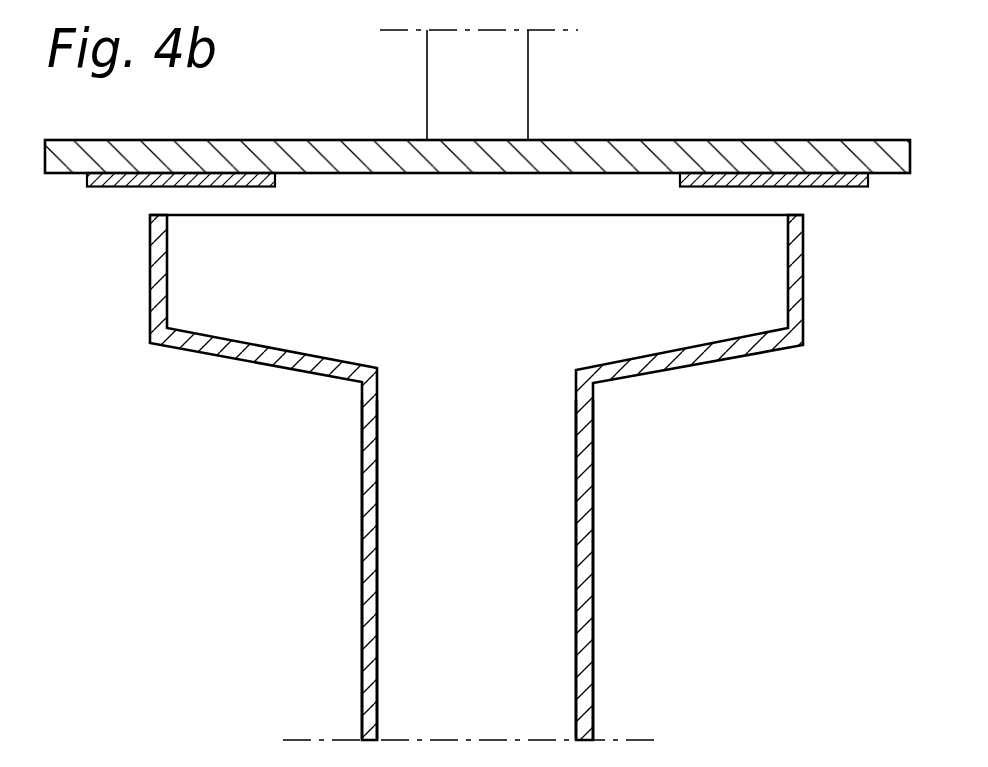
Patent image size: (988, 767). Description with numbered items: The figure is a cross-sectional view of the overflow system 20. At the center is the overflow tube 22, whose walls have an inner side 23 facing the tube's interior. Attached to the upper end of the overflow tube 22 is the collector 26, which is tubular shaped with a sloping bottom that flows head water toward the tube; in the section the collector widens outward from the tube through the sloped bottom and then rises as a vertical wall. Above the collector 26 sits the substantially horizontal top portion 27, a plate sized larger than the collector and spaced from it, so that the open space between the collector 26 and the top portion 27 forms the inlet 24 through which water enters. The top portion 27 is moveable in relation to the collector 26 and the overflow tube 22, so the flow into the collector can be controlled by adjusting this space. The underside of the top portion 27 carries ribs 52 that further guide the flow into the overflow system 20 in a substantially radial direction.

The overflow system 20 is at (477, 101).
The overflow tube 22 is at (486, 570).
The inner side 23 is at (377, 615).
The inlet 24 is at (148, 200).
The collector 26 is at (468, 477).
The top portion 27 is at (699, 132).
The ribs 52 is at (277, 180).